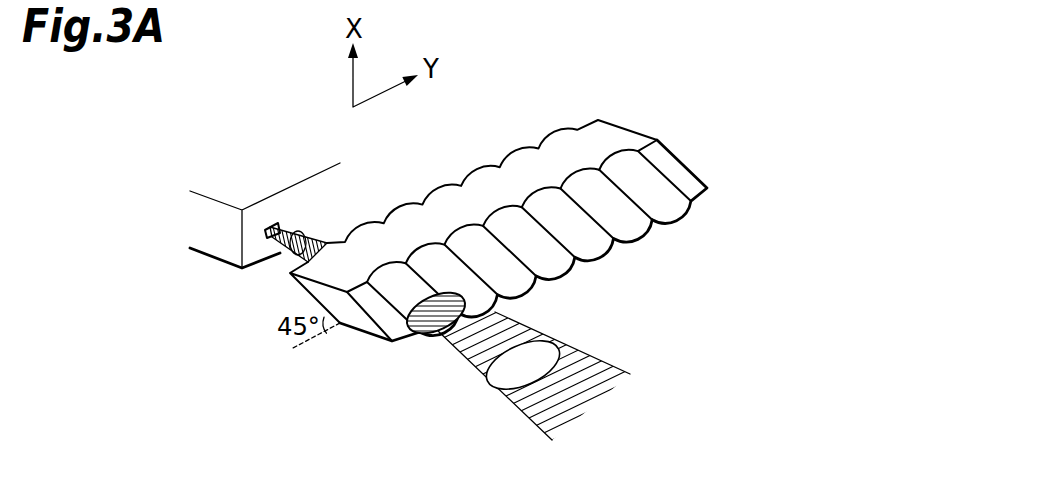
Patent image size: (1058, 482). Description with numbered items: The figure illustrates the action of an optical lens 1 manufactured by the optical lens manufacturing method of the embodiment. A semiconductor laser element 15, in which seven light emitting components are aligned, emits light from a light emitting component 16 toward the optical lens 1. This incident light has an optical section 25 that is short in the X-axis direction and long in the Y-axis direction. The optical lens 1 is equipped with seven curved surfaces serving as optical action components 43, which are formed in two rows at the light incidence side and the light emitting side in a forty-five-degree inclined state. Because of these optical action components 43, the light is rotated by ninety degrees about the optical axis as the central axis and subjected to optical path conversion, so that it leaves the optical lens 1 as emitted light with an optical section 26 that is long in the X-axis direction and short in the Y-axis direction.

The optical lens 1 is at (514, 185).
The semiconductor laser element 15 is at (213, 240).
The light emitting component 16 is at (272, 212).
The optical section 25 is at (298, 240).
The optical section 26 is at (548, 352).
The optical action component 43 is at (667, 205).